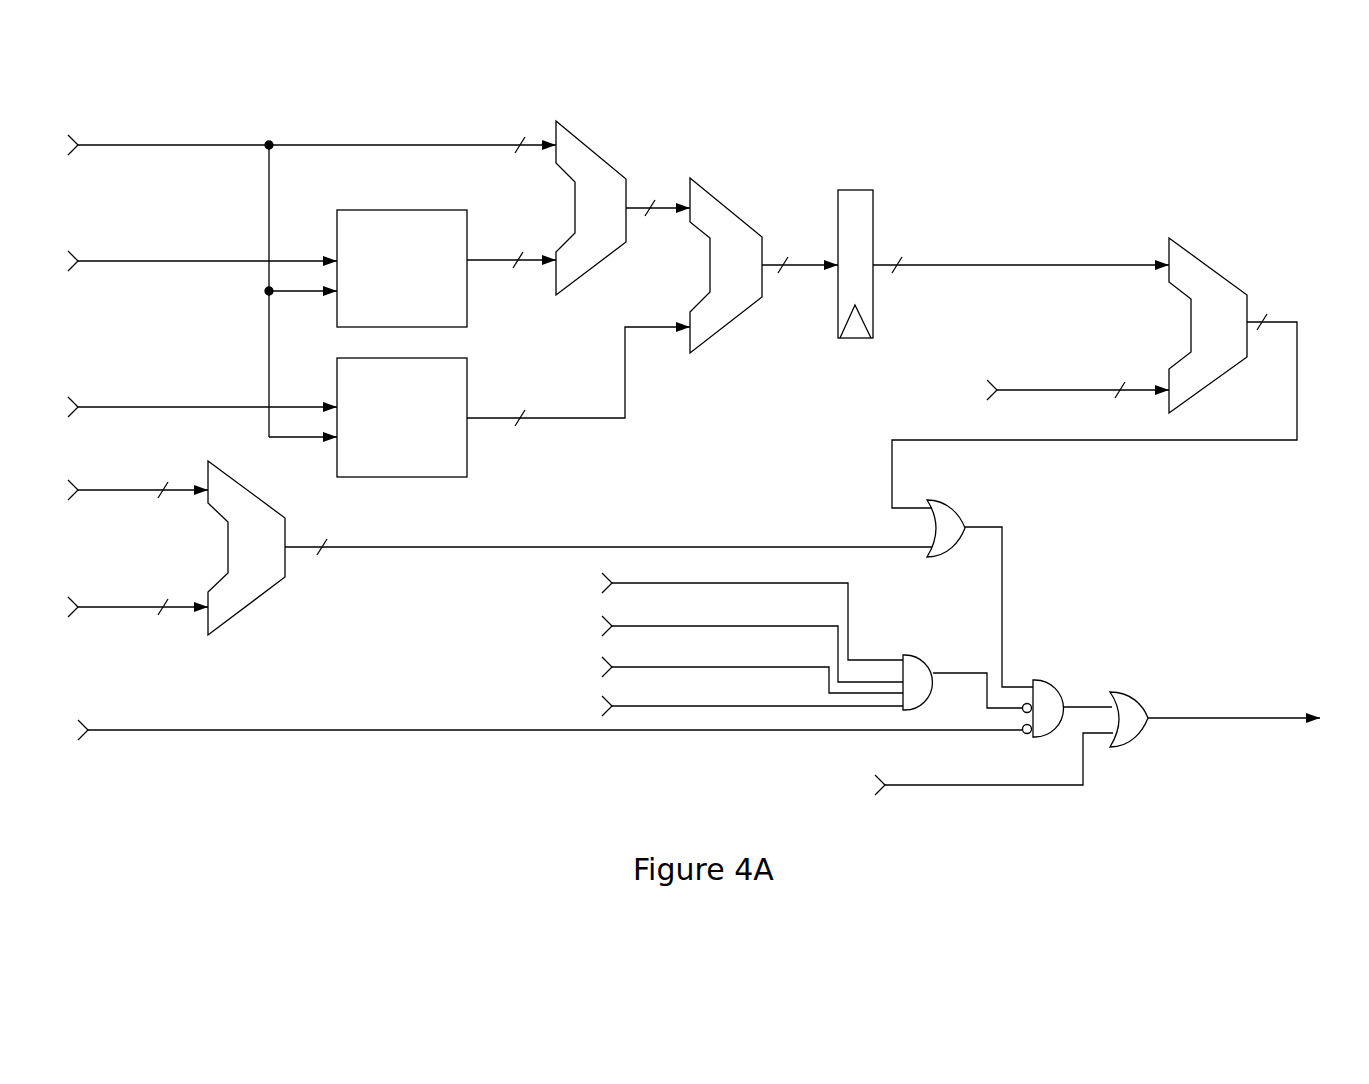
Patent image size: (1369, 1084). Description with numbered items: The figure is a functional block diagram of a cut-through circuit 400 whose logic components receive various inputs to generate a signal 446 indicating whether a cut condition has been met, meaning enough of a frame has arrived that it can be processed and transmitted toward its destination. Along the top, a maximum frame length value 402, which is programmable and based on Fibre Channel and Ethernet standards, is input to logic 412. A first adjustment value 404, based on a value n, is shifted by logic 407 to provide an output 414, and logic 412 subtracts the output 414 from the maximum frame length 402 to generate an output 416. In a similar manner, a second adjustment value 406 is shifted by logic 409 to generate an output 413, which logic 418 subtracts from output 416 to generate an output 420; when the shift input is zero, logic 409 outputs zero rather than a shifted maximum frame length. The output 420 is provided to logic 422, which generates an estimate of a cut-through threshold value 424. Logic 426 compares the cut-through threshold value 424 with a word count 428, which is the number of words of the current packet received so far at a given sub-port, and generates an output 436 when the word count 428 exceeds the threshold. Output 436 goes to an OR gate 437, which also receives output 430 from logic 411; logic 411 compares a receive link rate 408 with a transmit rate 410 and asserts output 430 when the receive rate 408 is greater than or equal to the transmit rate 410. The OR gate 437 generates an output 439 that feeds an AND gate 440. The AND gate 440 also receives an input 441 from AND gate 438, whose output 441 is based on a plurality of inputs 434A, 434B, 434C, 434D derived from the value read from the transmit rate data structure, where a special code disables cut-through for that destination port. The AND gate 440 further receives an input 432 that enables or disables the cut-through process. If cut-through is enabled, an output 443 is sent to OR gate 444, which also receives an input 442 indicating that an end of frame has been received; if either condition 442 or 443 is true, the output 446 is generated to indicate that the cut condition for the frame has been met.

The cut-through circuit 400 is at (470, 787).
The maximum frame length value 402 is at (312, 145).
The first adjustment value 404 is at (202, 291).
The second adjustment value 406 is at (202, 406).
The shift logic 407 is at (395, 210).
The receive link rate 408 is at (138, 491).
The shift logic 409 is at (467, 443).
The transmit rate 410 is at (138, 605).
The rate comparison logic 411 is at (257, 602).
The subtraction logic 412 is at (590, 150).
The shifted output 413 is at (625, 393).
The shifted output 414 is at (480, 262).
The output of logic 412 416 is at (632, 212).
The subtraction logic 418 is at (732, 215).
The output of logic 418 420 is at (770, 268).
The threshold logic 422 is at (855, 190).
The cut-through threshold value 424 is at (1021, 253).
The comparison logic 426 is at (1215, 270).
The word count 428 is at (1078, 393).
The output of logic 411 430 is at (500, 547).
The cut-through enable input 432 is at (555, 728).
The transmit rate input 434A is at (752, 608).
The transmit rate input 434B is at (752, 641).
The transmit rate input 434C is at (752, 667).
The transmit rate input 434D is at (752, 696).
The output of logic 426 436 is at (1205, 440).
The OR gate 437 is at (940, 500).
The AND gate 438 is at (917, 655).
The output of OR gate 437 439 is at (1002, 545).
The AND gate 440 is at (1040, 680).
The output of gate 438 441 is at (938, 670).
The end of frame input 442 is at (994, 775).
The output of AND gate 440 443 is at (1102, 700).
The OR gate 444 is at (1112, 747).
The cut condition signal 446 is at (1239, 711).